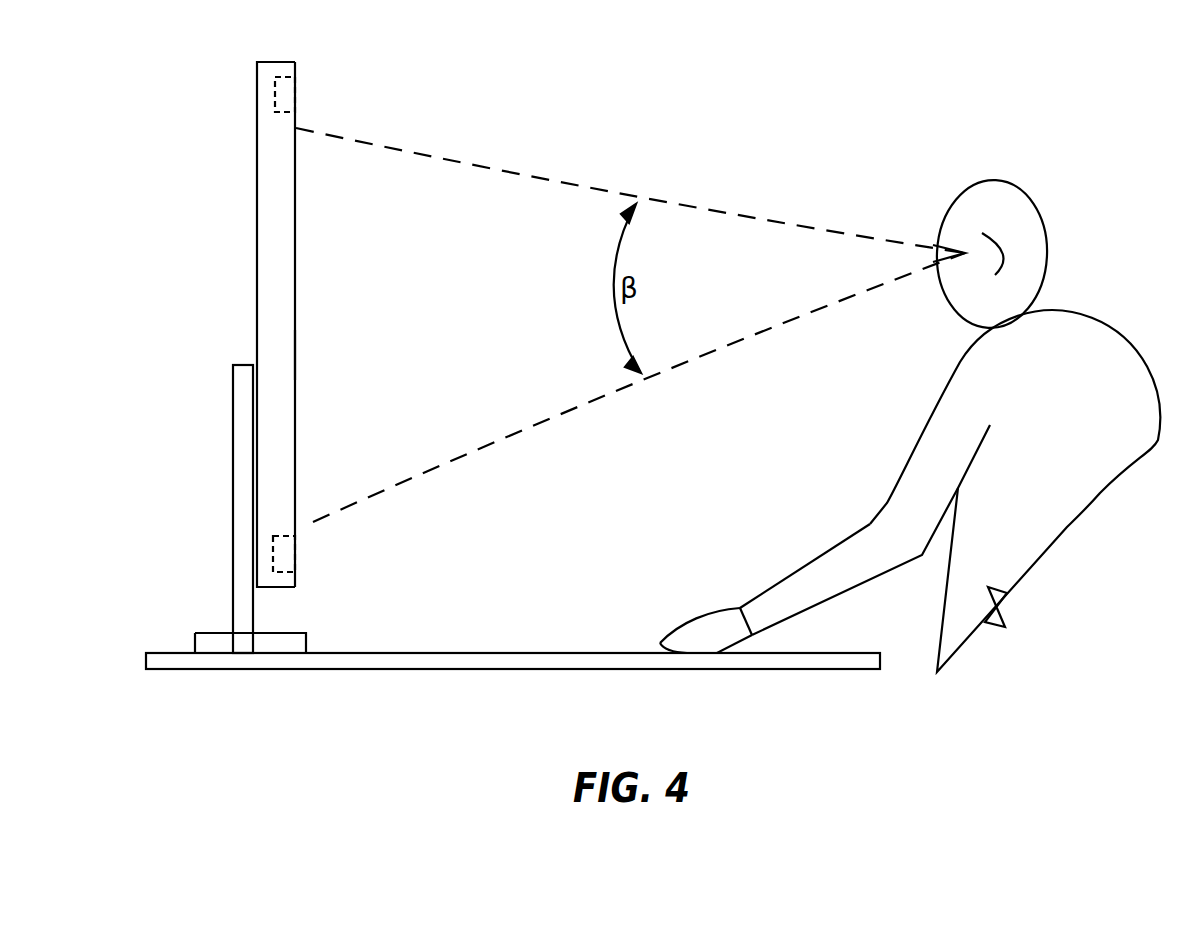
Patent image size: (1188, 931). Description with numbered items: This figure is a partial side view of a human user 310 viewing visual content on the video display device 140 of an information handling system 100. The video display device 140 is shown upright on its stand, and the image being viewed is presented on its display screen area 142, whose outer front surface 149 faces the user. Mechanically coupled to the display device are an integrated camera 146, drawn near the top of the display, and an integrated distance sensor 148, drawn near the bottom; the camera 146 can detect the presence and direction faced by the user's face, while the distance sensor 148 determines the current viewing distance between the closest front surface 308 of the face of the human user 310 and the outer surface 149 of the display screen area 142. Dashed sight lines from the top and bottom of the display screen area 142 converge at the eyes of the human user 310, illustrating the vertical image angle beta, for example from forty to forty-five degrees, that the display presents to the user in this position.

The information handling system 100 is at (232, 508).
The video display device 140 is at (280, 62).
The display screen area 142 is at (295, 260).
The integrated camera 146 is at (295, 95).
The integrated distance sensor 148 is at (292, 553).
The outer surface of display screen area 149 is at (295, 353).
The front surface of face 308 is at (935, 253).
The human user 310 is at (977, 178).